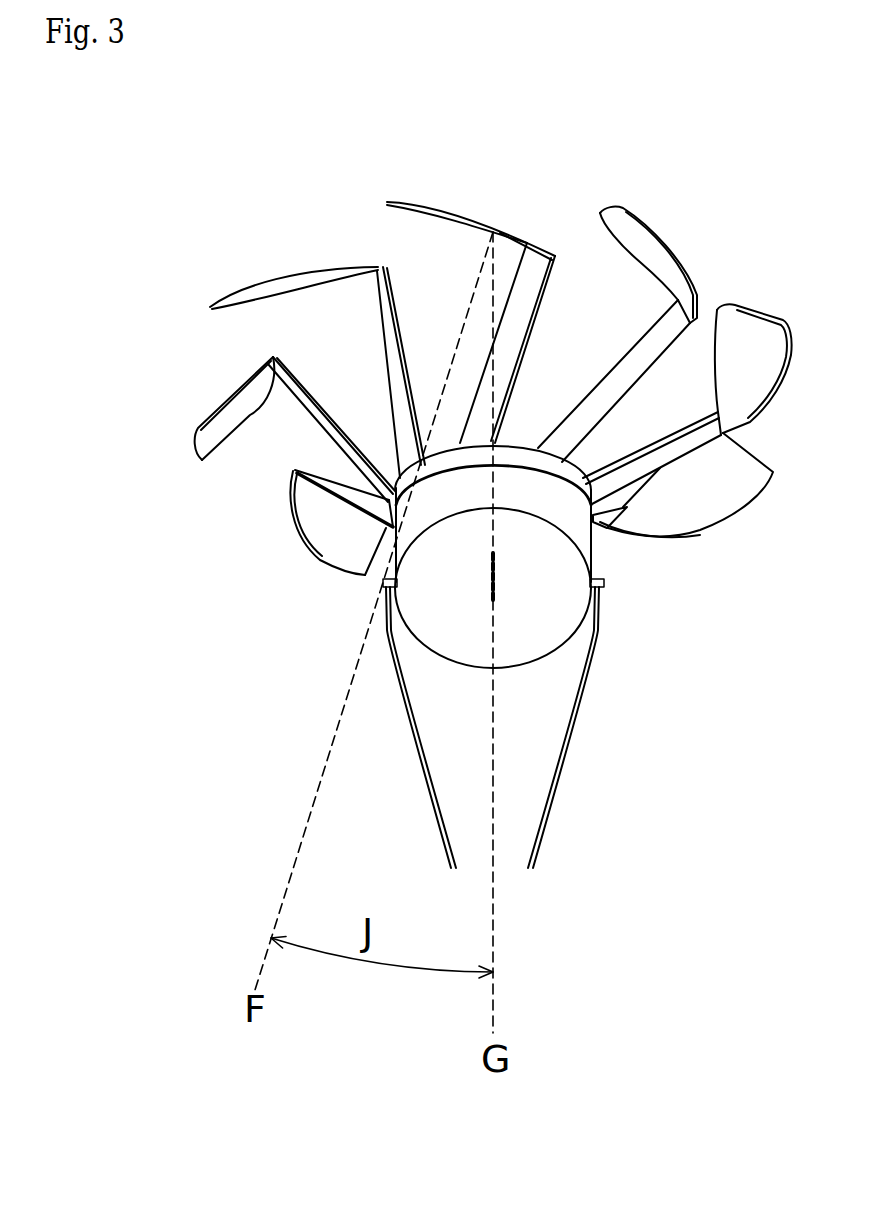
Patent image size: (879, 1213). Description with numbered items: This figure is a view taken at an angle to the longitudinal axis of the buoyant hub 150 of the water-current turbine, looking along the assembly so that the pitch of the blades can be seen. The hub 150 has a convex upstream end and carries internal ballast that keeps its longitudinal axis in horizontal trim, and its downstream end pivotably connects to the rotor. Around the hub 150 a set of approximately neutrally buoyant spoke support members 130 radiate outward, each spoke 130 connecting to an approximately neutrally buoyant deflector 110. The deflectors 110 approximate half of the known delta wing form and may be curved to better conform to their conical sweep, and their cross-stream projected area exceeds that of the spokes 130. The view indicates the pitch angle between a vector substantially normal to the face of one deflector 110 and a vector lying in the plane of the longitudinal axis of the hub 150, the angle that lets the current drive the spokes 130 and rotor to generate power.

The deflector 110 is at (437, 202).
The spoke support member 130 is at (548, 287).
The buoyant hub 150 is at (541, 656).